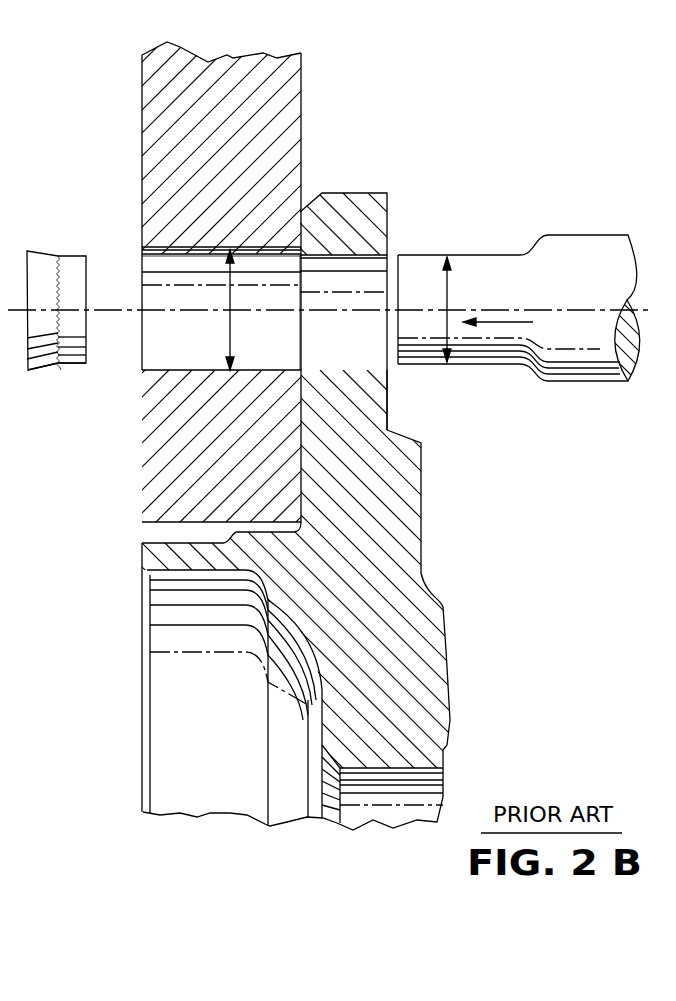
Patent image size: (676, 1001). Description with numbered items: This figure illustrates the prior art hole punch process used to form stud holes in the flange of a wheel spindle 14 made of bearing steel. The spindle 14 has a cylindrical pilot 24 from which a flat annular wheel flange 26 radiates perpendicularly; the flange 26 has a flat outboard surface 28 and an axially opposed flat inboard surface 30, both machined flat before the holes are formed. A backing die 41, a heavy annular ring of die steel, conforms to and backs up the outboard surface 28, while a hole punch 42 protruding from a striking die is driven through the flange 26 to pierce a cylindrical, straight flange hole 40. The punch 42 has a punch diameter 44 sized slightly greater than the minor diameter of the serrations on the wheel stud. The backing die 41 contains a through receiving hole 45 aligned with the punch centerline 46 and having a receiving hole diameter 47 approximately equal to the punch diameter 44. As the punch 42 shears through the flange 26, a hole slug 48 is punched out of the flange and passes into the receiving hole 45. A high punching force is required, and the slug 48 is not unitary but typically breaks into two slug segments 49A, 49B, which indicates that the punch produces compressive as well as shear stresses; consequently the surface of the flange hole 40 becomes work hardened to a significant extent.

The wheel spindle 14 is at (468, 567).
The cylindrical pilot 24 is at (195, 572).
The wheel flange 26 is at (408, 433).
The outboard surface 28 is at (306, 478).
The inboard surface 30 is at (388, 233).
The flange hole 40 is at (373, 347).
The backing die 41 is at (301, 83).
The hole punch 42 is at (502, 255).
The punch diameter 44 is at (448, 264).
The receiving hole 45 is at (143, 257).
The punch centerline 46 is at (537, 310).
The receiving hole diameter 47 is at (230, 348).
The hole slug 48 is at (39, 247).
The slug segment 49A is at (68, 363).
The slug segment 49B is at (38, 372).